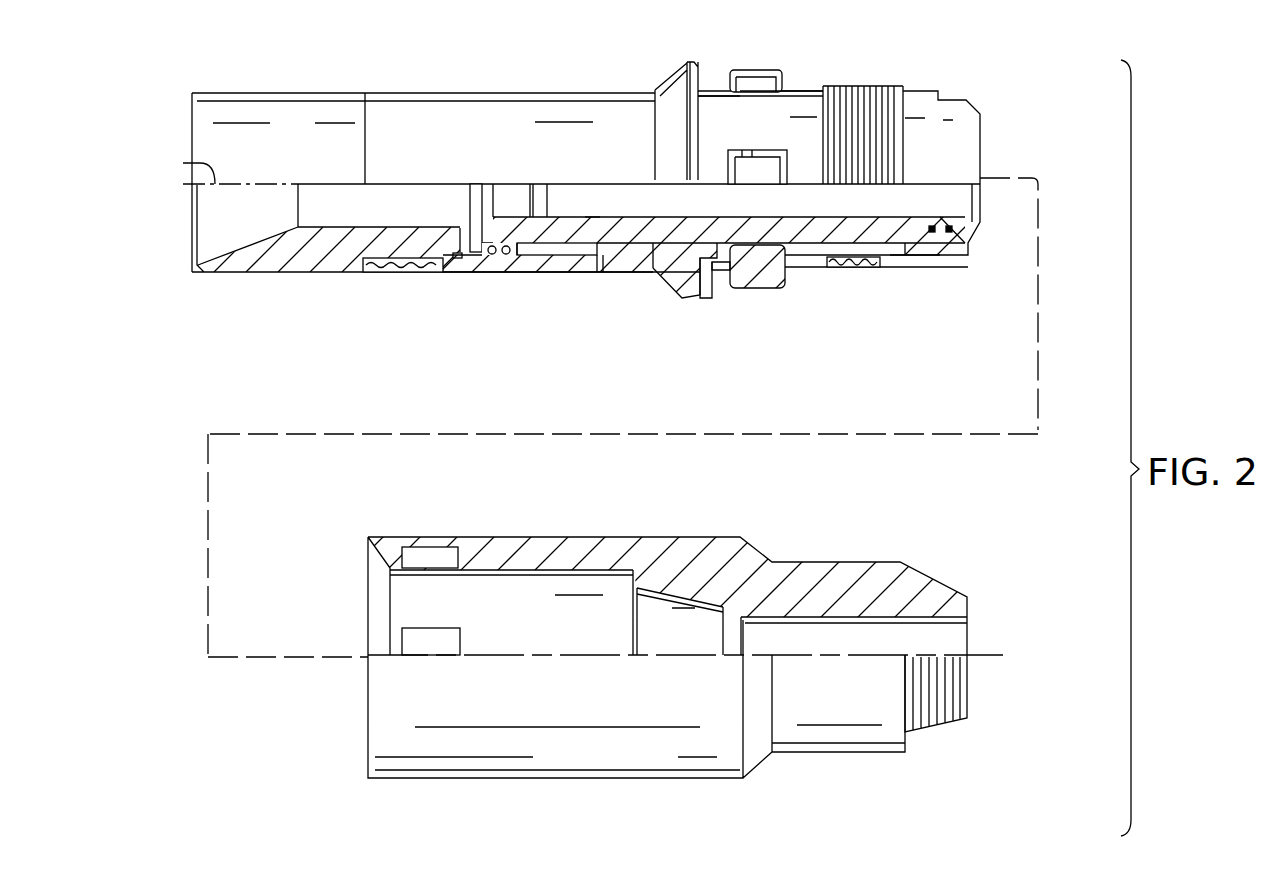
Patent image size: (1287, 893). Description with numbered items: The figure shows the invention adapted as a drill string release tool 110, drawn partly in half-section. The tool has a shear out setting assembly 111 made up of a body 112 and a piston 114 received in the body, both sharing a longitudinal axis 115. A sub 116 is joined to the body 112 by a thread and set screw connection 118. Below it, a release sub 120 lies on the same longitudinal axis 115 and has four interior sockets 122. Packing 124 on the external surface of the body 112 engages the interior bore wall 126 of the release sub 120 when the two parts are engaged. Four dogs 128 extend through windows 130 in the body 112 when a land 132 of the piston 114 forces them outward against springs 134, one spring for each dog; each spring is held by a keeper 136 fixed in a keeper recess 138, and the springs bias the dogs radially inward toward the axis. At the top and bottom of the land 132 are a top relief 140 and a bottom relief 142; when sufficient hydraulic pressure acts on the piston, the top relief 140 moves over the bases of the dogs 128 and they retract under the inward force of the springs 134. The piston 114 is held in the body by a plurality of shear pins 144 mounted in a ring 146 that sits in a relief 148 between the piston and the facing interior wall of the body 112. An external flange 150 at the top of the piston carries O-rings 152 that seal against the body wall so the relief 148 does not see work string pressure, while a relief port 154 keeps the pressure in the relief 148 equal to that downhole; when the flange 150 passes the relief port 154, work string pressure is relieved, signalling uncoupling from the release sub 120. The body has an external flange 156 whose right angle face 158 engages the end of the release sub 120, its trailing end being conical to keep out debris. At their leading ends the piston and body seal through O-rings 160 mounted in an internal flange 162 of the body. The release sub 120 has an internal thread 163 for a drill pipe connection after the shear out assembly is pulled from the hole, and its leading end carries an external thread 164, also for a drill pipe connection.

The drill string release tool 110 is at (924, 54).
The shear out setting assembly 111 is at (781, 98).
The body 112 is at (550, 86).
The piston 114 is at (958, 202).
The longitudinal axis 115 is at (220, 171).
The sub 116 is at (290, 128).
The thread and set screw connection 118 is at (455, 266).
The release sub 120 is at (784, 530).
The interior sockets 122 is at (418, 560).
The packing 124 is at (853, 100).
The interior bore wall 126 is at (520, 568).
The dogs 128 is at (756, 70).
The windows 130 is at (748, 150).
The land 132 is at (752, 236).
The springs 134 is at (716, 272).
The keeper 136 is at (805, 262).
The keeper recess 138 is at (704, 292).
The top relief 140 is at (645, 242).
The bottom relief 142 is at (915, 258).
The shear pins 144 is at (590, 218).
The ring 146 is at (602, 262).
The relief 148 is at (520, 230).
The external flange 150 is at (482, 240).
The O-rings 152 is at (507, 257).
The relief port 154 is at (577, 262).
The external flange 156 is at (688, 74).
The right angle face 158 is at (703, 110).
The O-rings 160 is at (958, 214).
The internal flange 162 is at (952, 242).
The internal thread 163 is at (645, 588).
The external thread 164 is at (940, 728).